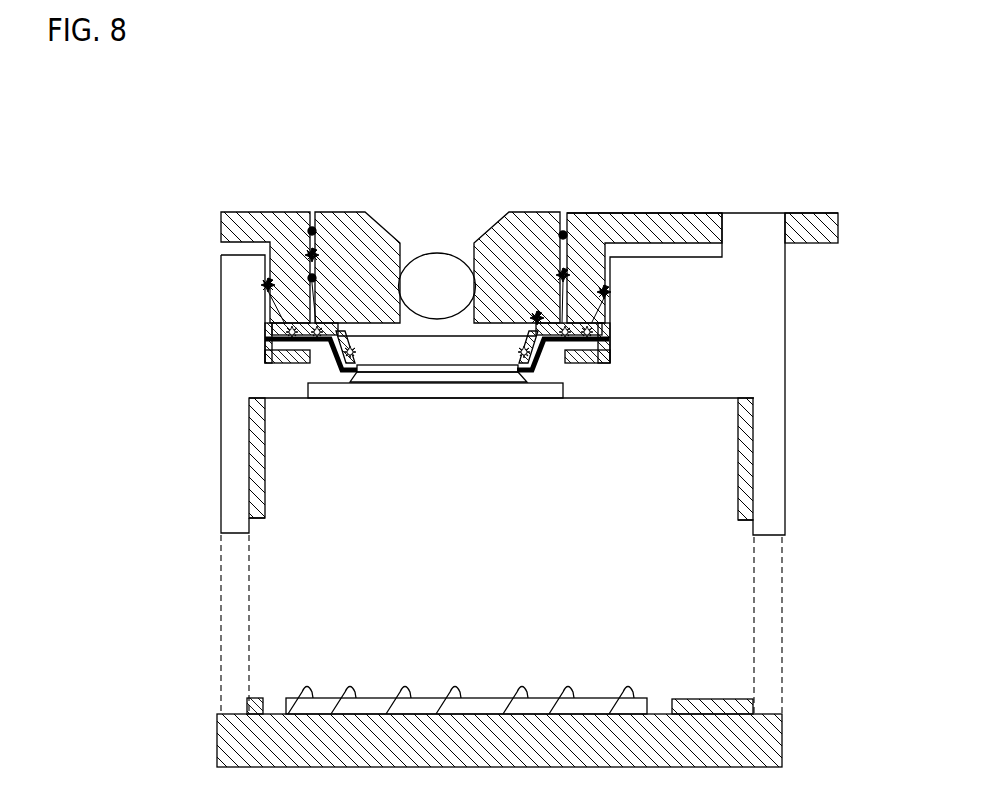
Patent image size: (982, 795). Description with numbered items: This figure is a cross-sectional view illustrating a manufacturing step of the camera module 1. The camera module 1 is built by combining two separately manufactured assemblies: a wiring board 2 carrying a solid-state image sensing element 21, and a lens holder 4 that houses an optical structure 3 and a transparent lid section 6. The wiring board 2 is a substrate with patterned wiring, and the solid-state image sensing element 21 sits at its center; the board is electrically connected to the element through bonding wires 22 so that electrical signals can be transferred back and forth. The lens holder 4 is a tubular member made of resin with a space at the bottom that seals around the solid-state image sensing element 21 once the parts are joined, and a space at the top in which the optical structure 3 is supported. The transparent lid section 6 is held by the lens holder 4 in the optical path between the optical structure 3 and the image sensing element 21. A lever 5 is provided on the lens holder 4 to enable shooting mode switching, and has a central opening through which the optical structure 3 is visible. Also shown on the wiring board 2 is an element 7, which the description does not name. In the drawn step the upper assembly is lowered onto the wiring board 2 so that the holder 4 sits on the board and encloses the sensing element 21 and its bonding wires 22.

The camera module 1 is at (773, 172).
The wiring board 2 is at (770, 748).
The optical structure 3 is at (476, 188).
The lens holder 4 is at (771, 357).
The lever 5 is at (816, 222).
The transparent lid section 6 is at (443, 399).
The positioning member 7 is at (259, 698).
The solid-state image sensing element 21 is at (595, 698).
The bonding wires 22 is at (522, 684).